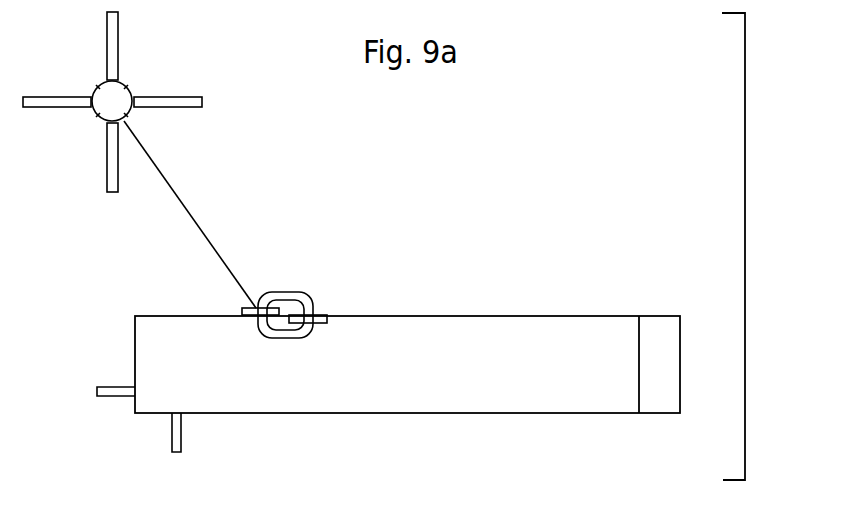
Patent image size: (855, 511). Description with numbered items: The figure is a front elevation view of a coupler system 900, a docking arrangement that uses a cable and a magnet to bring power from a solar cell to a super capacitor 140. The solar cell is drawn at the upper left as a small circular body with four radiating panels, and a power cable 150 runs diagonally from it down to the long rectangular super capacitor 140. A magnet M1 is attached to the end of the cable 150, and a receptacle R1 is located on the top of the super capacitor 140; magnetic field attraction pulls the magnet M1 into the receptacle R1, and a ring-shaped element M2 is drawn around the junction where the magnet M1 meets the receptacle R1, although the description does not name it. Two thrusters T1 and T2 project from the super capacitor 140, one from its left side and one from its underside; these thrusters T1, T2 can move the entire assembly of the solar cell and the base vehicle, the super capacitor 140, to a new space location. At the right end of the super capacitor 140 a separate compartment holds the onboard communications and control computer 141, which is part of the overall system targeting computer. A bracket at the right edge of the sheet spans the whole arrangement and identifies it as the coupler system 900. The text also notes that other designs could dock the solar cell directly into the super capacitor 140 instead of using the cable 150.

The power cable 150 is at (190, 214).
The super capacitor 140 is at (529, 408).
The onboard communications and control computer 141 is at (658, 332).
The magnet M1 is at (242, 307).
The second mount ring M2 is at (298, 295).
The receptacle R1 is at (327, 317).
The thruster T1 is at (100, 391).
The thruster T2 is at (175, 442).
The coupler system 900 is at (745, 247).